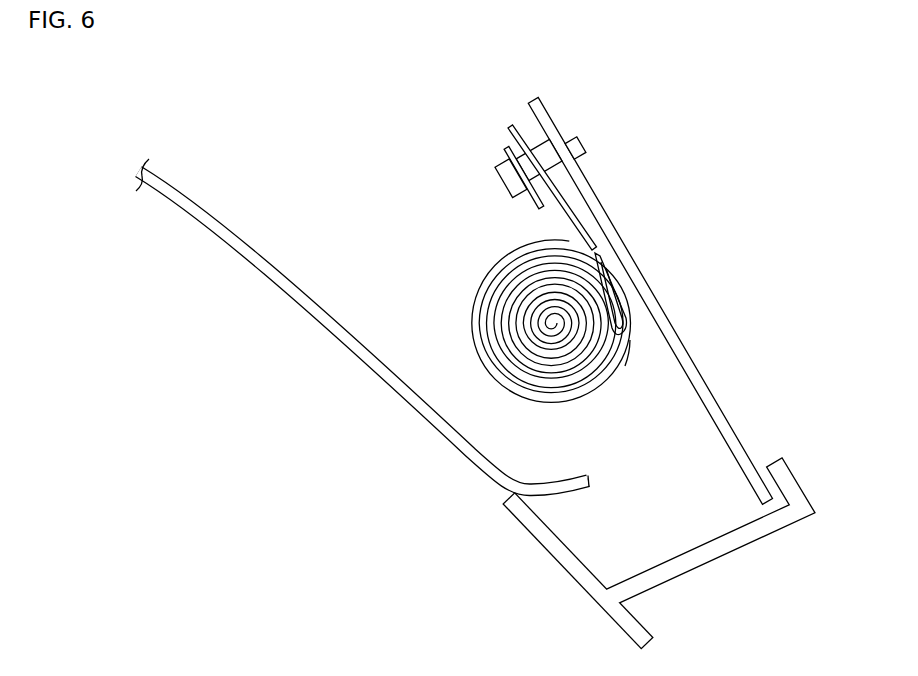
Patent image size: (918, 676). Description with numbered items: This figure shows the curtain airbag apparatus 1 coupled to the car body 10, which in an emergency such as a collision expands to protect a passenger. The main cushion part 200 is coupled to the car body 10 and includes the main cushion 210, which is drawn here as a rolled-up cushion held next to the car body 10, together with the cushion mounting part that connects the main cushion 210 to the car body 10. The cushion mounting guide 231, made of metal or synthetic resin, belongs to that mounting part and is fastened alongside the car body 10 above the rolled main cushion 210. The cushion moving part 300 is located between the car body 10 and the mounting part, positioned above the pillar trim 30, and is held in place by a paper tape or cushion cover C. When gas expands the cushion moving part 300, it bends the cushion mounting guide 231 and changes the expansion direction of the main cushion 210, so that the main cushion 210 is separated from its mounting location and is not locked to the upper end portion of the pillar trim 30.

The curtain airbag apparatus 1 is at (428, 304).
The car body 10 is at (621, 247).
The pillar trim 30 is at (569, 566).
The main cushion part 200 is at (500, 263).
The main cushion 210 is at (500, 292).
The cushion mounting guide 231 is at (572, 225).
The cushion moving part 300 is at (604, 272).
The cushion cover C is at (630, 352).